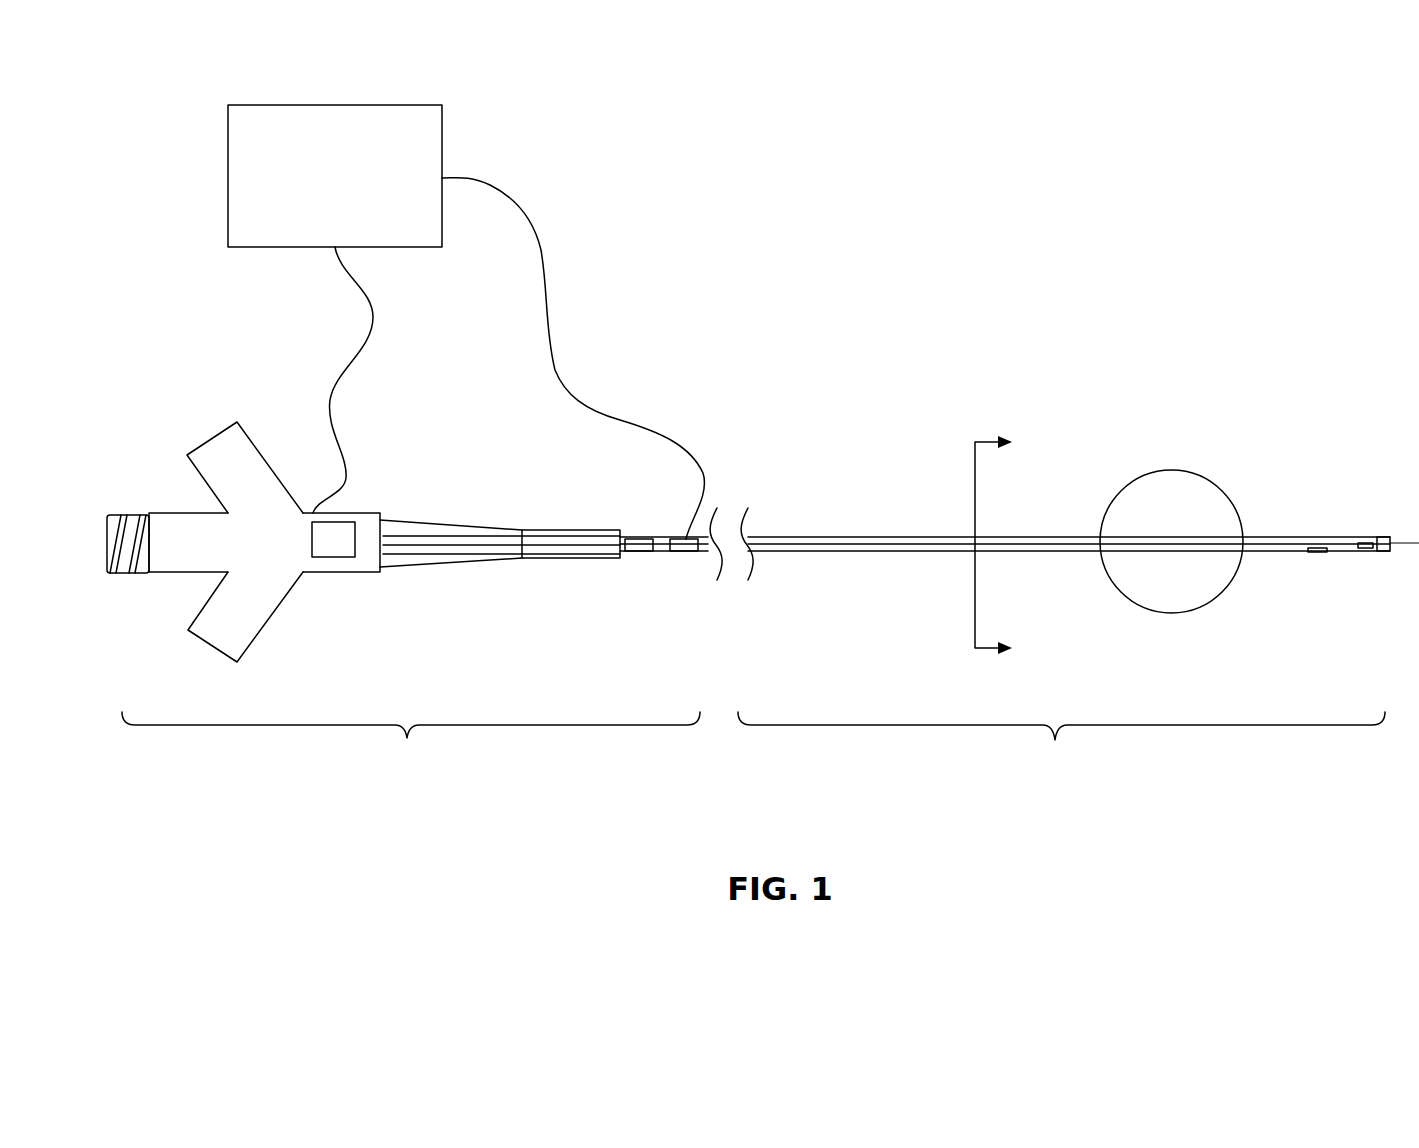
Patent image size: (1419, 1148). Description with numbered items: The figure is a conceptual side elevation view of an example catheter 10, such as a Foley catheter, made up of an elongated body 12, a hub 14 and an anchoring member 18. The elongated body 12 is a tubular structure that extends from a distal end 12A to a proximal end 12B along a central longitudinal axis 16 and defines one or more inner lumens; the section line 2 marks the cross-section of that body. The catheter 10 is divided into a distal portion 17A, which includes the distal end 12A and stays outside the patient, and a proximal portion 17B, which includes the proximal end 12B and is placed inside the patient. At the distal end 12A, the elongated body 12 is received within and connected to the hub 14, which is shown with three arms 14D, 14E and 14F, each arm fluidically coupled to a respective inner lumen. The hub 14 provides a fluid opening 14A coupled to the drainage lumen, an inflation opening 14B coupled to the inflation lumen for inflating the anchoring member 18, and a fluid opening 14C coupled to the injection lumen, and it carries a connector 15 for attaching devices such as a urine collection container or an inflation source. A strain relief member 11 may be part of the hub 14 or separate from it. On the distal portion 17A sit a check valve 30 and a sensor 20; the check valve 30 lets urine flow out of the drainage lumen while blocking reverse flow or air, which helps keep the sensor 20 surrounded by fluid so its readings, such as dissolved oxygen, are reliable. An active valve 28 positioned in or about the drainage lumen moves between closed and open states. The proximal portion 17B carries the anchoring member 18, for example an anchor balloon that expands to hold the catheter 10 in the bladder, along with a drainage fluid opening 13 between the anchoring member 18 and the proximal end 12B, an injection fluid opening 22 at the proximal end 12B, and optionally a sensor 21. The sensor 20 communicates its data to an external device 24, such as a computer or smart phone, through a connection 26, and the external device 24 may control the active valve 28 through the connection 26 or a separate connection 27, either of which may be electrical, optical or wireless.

The section line 2- 2 is at (1006, 546).
The catheter 10 is at (836, 442).
The strain relief member 11 is at (533, 530).
The elongated body 12 is at (874, 520).
The distal end 12A is at (110, 574).
The proximal end 12B is at (1390, 536).
The fluid opening 13 is at (1318, 552).
The hub 14 is at (362, 503).
The fluid opening 14A is at (108, 514).
The inflation opening 14B is at (220, 421).
The fluid opening 14C is at (203, 641).
The arm 14D is at (158, 572).
The arm 14E is at (279, 480).
The arm 14F is at (268, 620).
The connector 15 is at (106, 546).
The central longitudinal axis 16 is at (1048, 537).
The distal portion 17A is at (411, 746).
The proximal portion 17B is at (1061, 747).
The anchoring member 18 is at (1165, 470).
The sensor 20 is at (333, 557).
The sensor 21 is at (1370, 548).
The fluid opening 22 is at (1395, 551).
The external device 24 is at (322, 217).
The connection 26 is at (373, 317).
The connection 27 is at (541, 250).
The active valve 28 is at (685, 552).
The check valve 30 is at (640, 552).